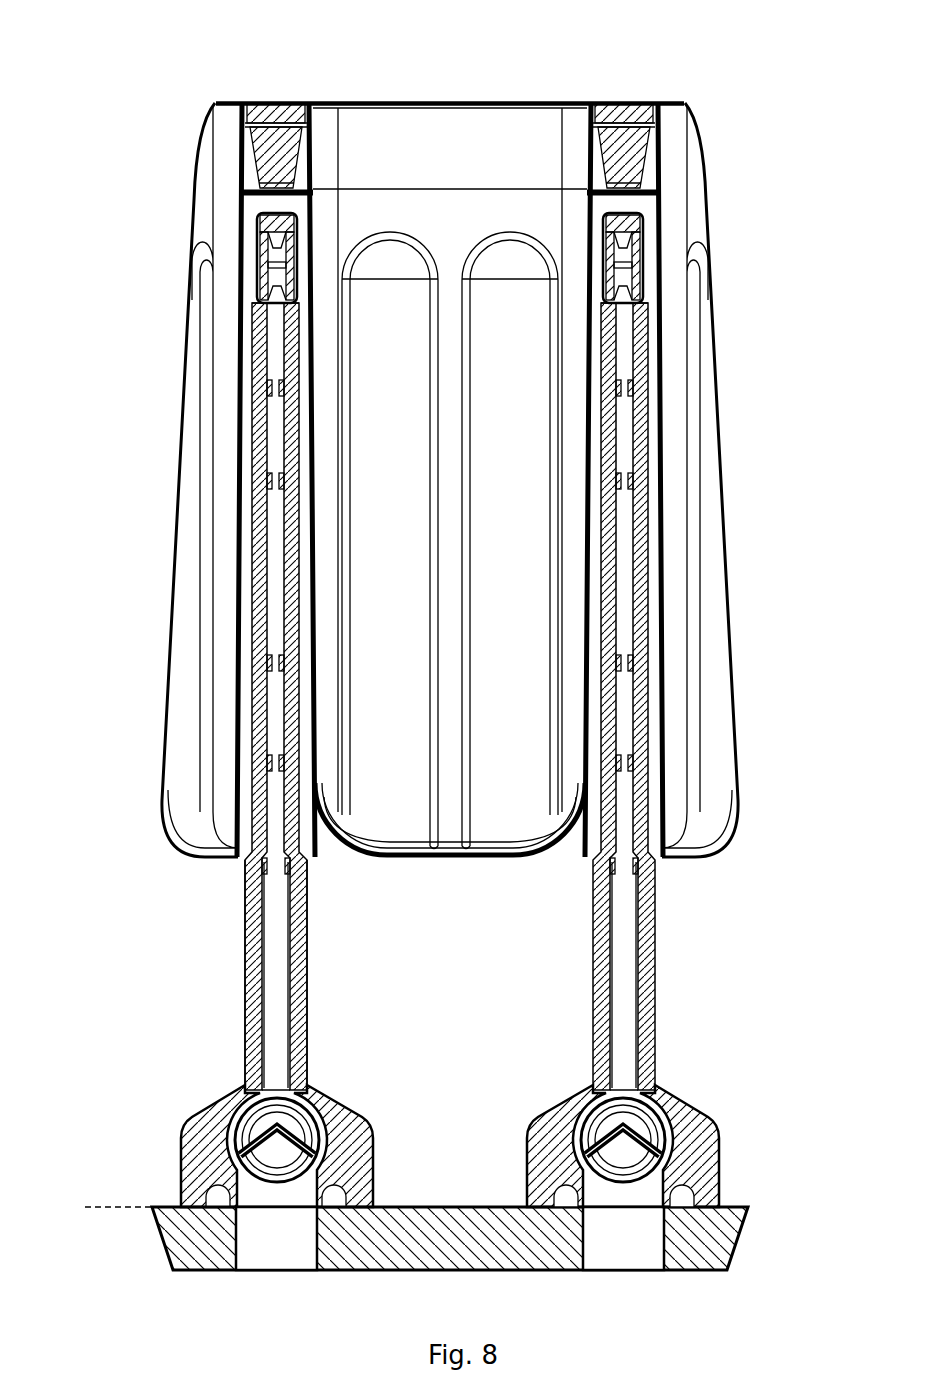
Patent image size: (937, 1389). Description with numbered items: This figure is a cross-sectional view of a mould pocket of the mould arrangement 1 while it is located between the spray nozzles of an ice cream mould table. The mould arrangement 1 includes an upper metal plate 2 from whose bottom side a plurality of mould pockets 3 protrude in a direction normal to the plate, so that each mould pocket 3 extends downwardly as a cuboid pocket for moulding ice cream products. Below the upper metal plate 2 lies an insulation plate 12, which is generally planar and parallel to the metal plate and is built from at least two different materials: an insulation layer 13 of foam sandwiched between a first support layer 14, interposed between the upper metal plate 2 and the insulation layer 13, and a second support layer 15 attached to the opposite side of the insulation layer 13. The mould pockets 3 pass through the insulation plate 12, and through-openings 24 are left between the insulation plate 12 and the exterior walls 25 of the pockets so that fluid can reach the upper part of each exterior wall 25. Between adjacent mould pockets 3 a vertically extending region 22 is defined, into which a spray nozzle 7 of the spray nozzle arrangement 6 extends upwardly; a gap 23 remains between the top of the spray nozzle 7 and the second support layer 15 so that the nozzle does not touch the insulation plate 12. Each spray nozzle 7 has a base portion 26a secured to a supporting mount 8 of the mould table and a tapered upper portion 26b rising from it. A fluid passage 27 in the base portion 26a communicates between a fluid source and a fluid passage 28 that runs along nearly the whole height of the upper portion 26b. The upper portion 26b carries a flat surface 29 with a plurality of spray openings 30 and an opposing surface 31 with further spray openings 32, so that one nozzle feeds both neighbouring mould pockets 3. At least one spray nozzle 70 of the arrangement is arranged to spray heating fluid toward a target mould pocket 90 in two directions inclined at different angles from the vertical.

The mould arrangement 1 is at (140, 62).
The upper metal plate 2 is at (295, 110).
The mould pocket 3 is at (360, 333).
The spray nozzle arrangement 6 is at (216, 988).
The spray nozzle 7 is at (216, 960).
The supporting mount 8 is at (172, 1243).
The insulation plate 12 is at (255, 152).
The insulation layer 13 is at (290, 165).
The first support layer 14 is at (240, 118).
The second support layer 15 is at (238, 195).
The vertically extending region 22 is at (240, 262).
The gap 23 is at (645, 211).
The through-opening 24 is at (652, 152).
The exterior wall 25 is at (661, 127).
The base portion 26a is at (697, 1128).
The upper portion 26b is at (246, 858).
The fluid passage 27 is at (640, 1198).
The fluid passage 28 is at (622, 973).
The surface 29 is at (252, 870).
The spray opening 30 is at (262, 662).
The opposing surface 31 is at (310, 945).
The spray opening 32 is at (282, 766).
The spray nozzle 70 is at (248, 595).
The target mould pocket 90 is at (275, 460).